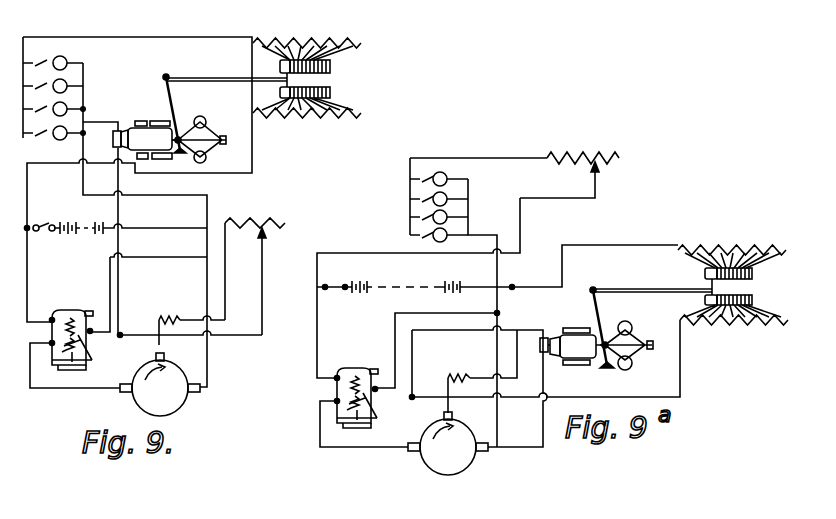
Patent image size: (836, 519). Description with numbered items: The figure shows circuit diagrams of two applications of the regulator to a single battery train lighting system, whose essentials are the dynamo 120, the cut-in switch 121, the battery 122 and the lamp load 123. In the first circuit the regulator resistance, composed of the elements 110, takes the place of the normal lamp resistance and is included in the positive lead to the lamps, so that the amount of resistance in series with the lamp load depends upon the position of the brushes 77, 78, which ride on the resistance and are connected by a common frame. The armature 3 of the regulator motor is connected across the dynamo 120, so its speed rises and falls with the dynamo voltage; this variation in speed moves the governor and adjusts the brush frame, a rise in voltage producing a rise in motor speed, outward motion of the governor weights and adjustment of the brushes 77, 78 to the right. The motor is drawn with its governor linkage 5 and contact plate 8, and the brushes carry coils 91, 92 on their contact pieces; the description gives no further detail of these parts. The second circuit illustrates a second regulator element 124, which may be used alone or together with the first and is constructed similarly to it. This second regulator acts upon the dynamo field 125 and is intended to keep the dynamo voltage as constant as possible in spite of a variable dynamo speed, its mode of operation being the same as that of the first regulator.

In FIG. 9, the armature 3 is at (144, 134).
In FIG. 9A, the armature 3 is at (576, 340).
In FIG. 9, the centrifugal governor lever 5 is at (168, 120).
In FIG. 9A, the centrifugal governor lever 5 is at (584, 367).
In FIG. 9, the motor contact plate 8 is at (138, 123).
In FIG. 9, the brush 77 is at (279, 92).
In FIG. 9, the brush 78 is at (279, 67).
In FIG. 9, the lower brush coil 91 is at (333, 92).
In FIG. 9, the upper brush coil 92 is at (333, 67).
In FIG. 9, the regulator resistance elements 110 is at (310, 116).
In FIG. 9A, the regulator resistance elements 110 is at (595, 152).
In FIG. 9, the dynamo 120 is at (160, 384).
In FIG. 9A, the dynamo 120 is at (448, 443).
In FIG. 9, the cut-in switch 121 is at (68, 310).
In FIG. 9A, the cut-in switch 121 is at (334, 394).
In FIG. 9, the battery 122 is at (85, 222).
In FIG. 9A, the battery 122 is at (368, 288).
In FIG. 9, the lamp load 123 is at (68, 95).
In FIG. 9A, the lamp load 123 is at (455, 212).
In FIG. 9, the second regulator element 124 is at (255, 265).
In FIG. 9A, the second regulator element 124 is at (740, 262).
In FIG. 9, the dynamo field 125 is at (165, 318).
In FIG. 9A, the dynamo field 125 is at (459, 376).